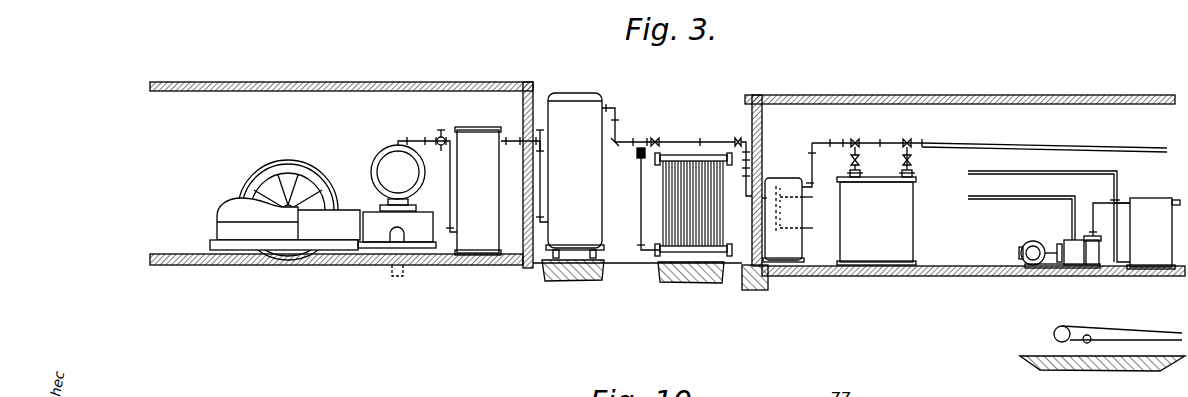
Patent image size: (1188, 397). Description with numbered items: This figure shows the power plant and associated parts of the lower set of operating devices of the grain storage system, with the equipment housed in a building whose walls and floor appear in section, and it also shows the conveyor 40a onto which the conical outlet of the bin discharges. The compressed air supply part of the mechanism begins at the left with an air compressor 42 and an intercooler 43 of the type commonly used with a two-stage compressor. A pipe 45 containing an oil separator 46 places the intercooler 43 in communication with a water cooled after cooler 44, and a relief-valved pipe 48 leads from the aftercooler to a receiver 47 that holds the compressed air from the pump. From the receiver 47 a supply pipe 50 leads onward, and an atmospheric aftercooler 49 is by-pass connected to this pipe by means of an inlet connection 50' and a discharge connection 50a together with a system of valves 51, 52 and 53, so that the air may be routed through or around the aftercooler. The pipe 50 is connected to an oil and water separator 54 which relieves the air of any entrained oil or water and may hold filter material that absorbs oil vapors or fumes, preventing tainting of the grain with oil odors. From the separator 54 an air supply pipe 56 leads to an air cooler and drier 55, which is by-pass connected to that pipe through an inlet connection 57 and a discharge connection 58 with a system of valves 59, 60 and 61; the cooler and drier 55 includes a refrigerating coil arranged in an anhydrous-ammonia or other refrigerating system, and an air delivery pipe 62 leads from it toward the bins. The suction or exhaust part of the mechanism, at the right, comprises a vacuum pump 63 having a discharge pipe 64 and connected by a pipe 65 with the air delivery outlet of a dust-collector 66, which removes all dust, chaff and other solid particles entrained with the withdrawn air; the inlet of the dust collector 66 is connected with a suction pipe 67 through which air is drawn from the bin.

The conveyor 40a is at (1136, 330).
The air compressor 42 is at (285, 210).
The intercooler 43 is at (397, 210).
The water cooled after cooler 44 is at (478, 191).
The pipe 45 is at (418, 138).
The oil separator 46 is at (442, 129).
The receiver 47 is at (575, 175).
The relief-valved pipe 48 is at (510, 137).
The atmospheric aftercooler 49 is at (672, 201).
The supply pipe 50 is at (668, 125).
The inlet connection 50' is at (633, 204).
The discharge connection 50a is at (752, 172).
The valve 51 is at (638, 154).
The valve 52 is at (655, 139).
The valve 53 is at (740, 151).
The oil and water separator 54 is at (790, 185).
The air cooler and drier 55 is at (905, 221).
The air supply pipe 56 is at (891, 143).
The inlet connection 57 is at (850, 159).
The discharge connection 58 is at (913, 158).
The valve 59 is at (849, 173).
The valve 60 is at (857, 143).
The valve 61 is at (914, 169).
The air delivery pipe 62 is at (1052, 141).
The vacuum pump 63 is at (1070, 250).
The discharge pipe 64 is at (1028, 201).
The pipe 65 is at (1096, 234).
The dust-collector 66 is at (1149, 204).
The suction pipe 67 is at (1181, 200).